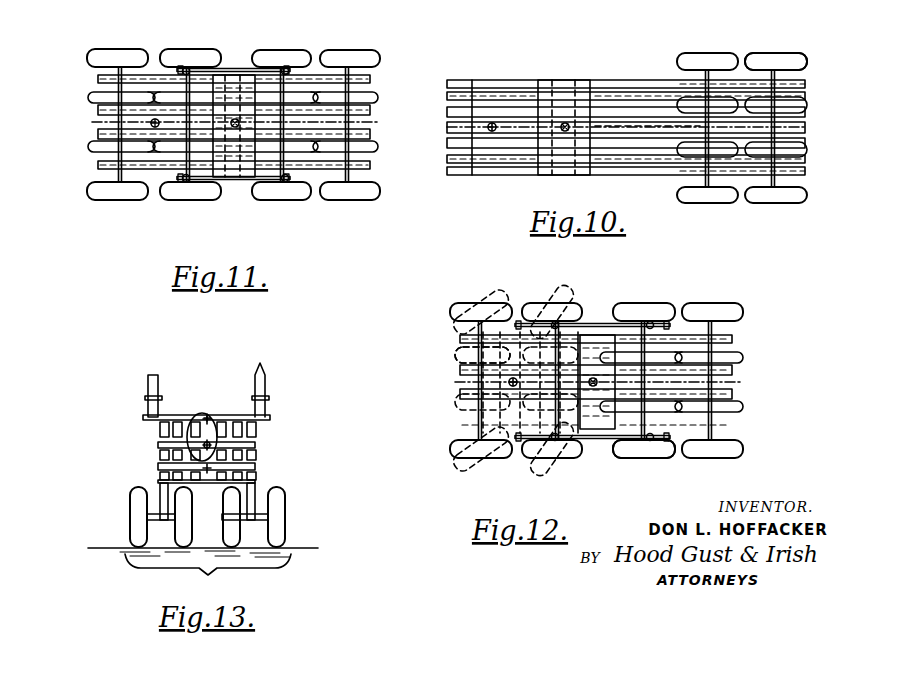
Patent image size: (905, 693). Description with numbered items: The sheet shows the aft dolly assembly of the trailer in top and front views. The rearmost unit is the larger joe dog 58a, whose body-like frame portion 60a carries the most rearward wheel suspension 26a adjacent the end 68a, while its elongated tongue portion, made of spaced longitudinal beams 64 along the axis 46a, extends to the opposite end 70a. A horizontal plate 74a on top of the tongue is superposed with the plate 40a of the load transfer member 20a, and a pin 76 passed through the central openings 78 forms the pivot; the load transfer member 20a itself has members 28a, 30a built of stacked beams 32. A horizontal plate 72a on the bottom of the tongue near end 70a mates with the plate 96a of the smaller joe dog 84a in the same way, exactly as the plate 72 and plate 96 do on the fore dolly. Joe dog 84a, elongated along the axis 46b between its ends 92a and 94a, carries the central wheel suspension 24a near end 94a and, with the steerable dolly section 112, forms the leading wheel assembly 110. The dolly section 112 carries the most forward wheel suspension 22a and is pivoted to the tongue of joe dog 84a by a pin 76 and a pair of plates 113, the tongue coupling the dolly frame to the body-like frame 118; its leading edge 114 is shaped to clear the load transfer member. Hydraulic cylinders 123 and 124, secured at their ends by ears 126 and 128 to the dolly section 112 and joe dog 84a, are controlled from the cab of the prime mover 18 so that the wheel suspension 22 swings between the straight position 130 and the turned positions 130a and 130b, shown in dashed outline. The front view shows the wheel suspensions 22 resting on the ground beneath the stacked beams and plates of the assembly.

In FIG. 13, the prime mover 18 is at (256, 483).
In FIG. 13, the load transfer member 20a is at (270, 418).
In FIG. 13, the wheel suspension 22 is at (208, 541).
In FIG. 11, the wheel suspension 22a is at (160, 55).
In FIG. 12, the wheel suspension 22a is at (545, 458).
In FIG. 11, the wheel suspension 24a is at (315, 193).
In FIG. 12, the wheel suspension 24a is at (690, 458).
In FIG. 10, the wheel suspension 26a is at (745, 55).
In FIG. 13, the member 28a is at (158, 398).
In FIG. 13, the member 30a is at (268, 398).
In FIG. 13, the beams 32 is at (148, 398).
In FIG. 13, the plate 40a is at (215, 420).
In FIG. 10, the longitudinal axis 46a is at (685, 128).
In FIG. 11, the axis 46b is at (277, 125).
In FIG. 12, the axis 46b is at (743, 382).
In FIG. 10, the joe dog 58a is at (523, 76).
In FIG. 13, the joe dog 58a is at (265, 437).
In FIG. 10, the body-like frame portion 60a is at (625, 157).
In FIG. 11, the beams 64 is at (378, 97).
In FIG. 10, the beams 64 is at (447, 171).
In FIG. 12, the beams 64 is at (743, 352).
In FIG. 13, the beams 64 is at (160, 430).
In FIG. 10, the end 68a is at (805, 133).
In FIG. 10, the end 70a is at (447, 175).
In FIG. 13, the horizontal plate 72 is at (158, 446).
In FIG. 10, the horizontal plate 72a is at (488, 90).
In FIG. 10, the horizontal plate 74a is at (553, 172).
In FIG. 11, the pin 76 is at (151, 122).
In FIG. 13, the pin 76 is at (210, 415).
In FIG. 11, the openings 78 is at (234, 119).
In FIG. 10, the openings 78 is at (566, 123).
In FIG. 13, the openings 78 is at (206, 442).
In FIG. 11, the joe dog 84a is at (337, 83).
In FIG. 12, the joe dog 84a is at (712, 343).
In FIG. 13, the joe dog 84a is at (256, 470).
In FIG. 11, the end 92a is at (108, 138).
In FIG. 12, the end 92a is at (455, 357).
In FIG. 11, the end 94a is at (373, 182).
In FIG. 12, the end 94a is at (743, 400).
In FIG. 13, the plate 96 is at (158, 467).
In FIG. 11, the plate 96a is at (230, 160).
In FIG. 12, the plate 96a is at (615, 350).
In FIG. 11, the leading wheel assembly 110 is at (160, 178).
In FIG. 12, the leading wheel assembly 110 is at (460, 433).
In FIG. 11, the steerable dolly section 112 is at (135, 167).
In FIG. 12, the steerable dolly section 112 is at (478, 462).
In FIG. 11, the plates 113 is at (88, 150).
In FIG. 12, the plates 113 is at (580, 310).
In FIG. 13, the plates 113 is at (158, 481).
In FIG. 11, the leading edge 114 is at (98, 93).
In FIG. 12, the leading edge 114 is at (460, 372).
In FIG. 11, the body-like frame 118 is at (95, 165).
In FIG. 12, the body-like frame 118 is at (517, 307).
In FIG. 11, the hydraulic cylinder 123 is at (248, 70).
In FIG. 12, the hydraulic cylinder 123 is at (605, 323).
In FIG. 11, the hydraulic cylinder 124 is at (243, 182).
In FIG. 12, the hydraulic cylinder 124 is at (615, 435).
In FIG. 11, the ears 126 is at (186, 67).
In FIG. 12, the ears 126 is at (555, 321).
In FIG. 11, the ears 128 is at (287, 70).
In FIG. 12, the ears 128 is at (653, 323).
In FIG. 12, the position 130 is at (465, 303).
In FIG. 12, the position 130a is at (440, 340).
In FIG. 12, the position 130b is at (505, 290).